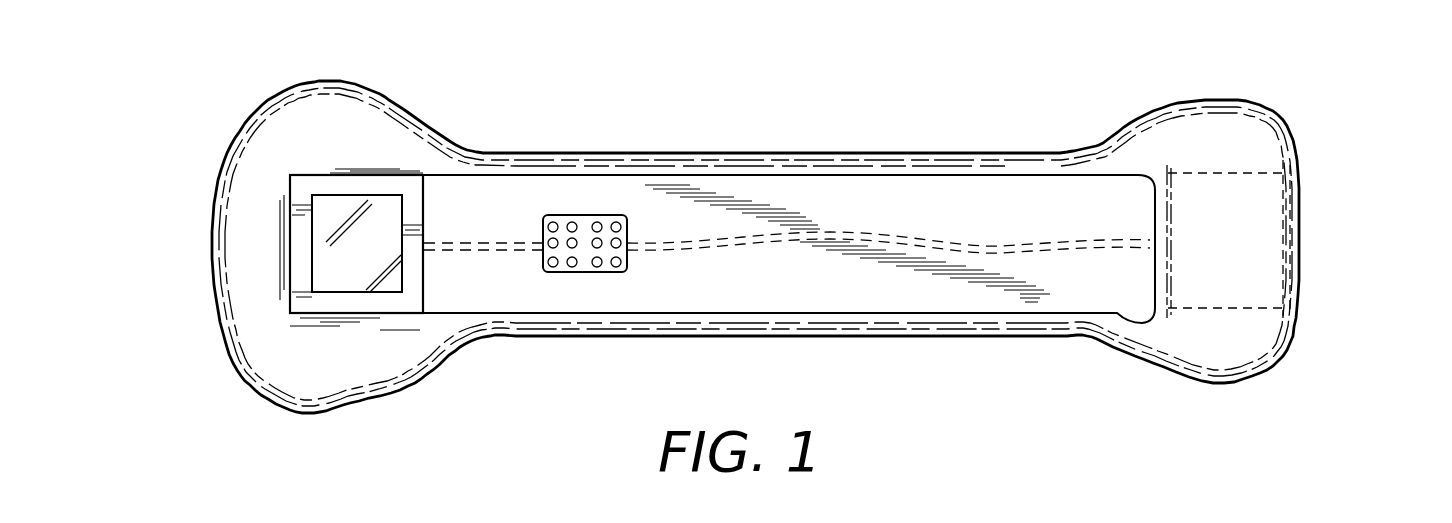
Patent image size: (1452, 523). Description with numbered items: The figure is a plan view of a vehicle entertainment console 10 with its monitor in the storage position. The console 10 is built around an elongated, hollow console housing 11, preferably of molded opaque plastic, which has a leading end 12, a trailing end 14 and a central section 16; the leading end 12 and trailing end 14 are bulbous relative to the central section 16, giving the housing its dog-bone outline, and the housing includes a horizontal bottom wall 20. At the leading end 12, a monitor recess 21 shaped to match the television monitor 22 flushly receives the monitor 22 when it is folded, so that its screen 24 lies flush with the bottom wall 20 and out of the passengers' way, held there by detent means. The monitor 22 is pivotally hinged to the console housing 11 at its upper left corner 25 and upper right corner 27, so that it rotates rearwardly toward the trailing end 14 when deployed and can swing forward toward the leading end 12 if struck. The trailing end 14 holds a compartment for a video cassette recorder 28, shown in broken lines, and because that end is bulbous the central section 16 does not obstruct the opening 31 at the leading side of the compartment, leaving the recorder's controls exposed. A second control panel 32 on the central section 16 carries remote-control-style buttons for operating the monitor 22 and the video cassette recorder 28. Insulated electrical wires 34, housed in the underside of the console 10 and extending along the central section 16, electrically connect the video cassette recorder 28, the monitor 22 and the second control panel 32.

The console 10 is at (1364, 196).
The console housing 11 is at (612, 154).
The leading end 12 is at (410, 99).
The trailing end 14 is at (1190, 94).
The central section 16 is at (765, 143).
The bottom wall 20 is at (790, 299).
The monitor recess 21 is at (322, 176).
The television monitor 22 is at (357, 325).
The screen 24 is at (378, 269).
The upper left corner 25 is at (408, 176).
The upper right corner 27 is at (408, 313).
The video cassette recorder 28 is at (1228, 168).
The opening 31 is at (1142, 200).
The second control panel 32 is at (592, 214).
The insulated electrical wires 34 is at (870, 238).